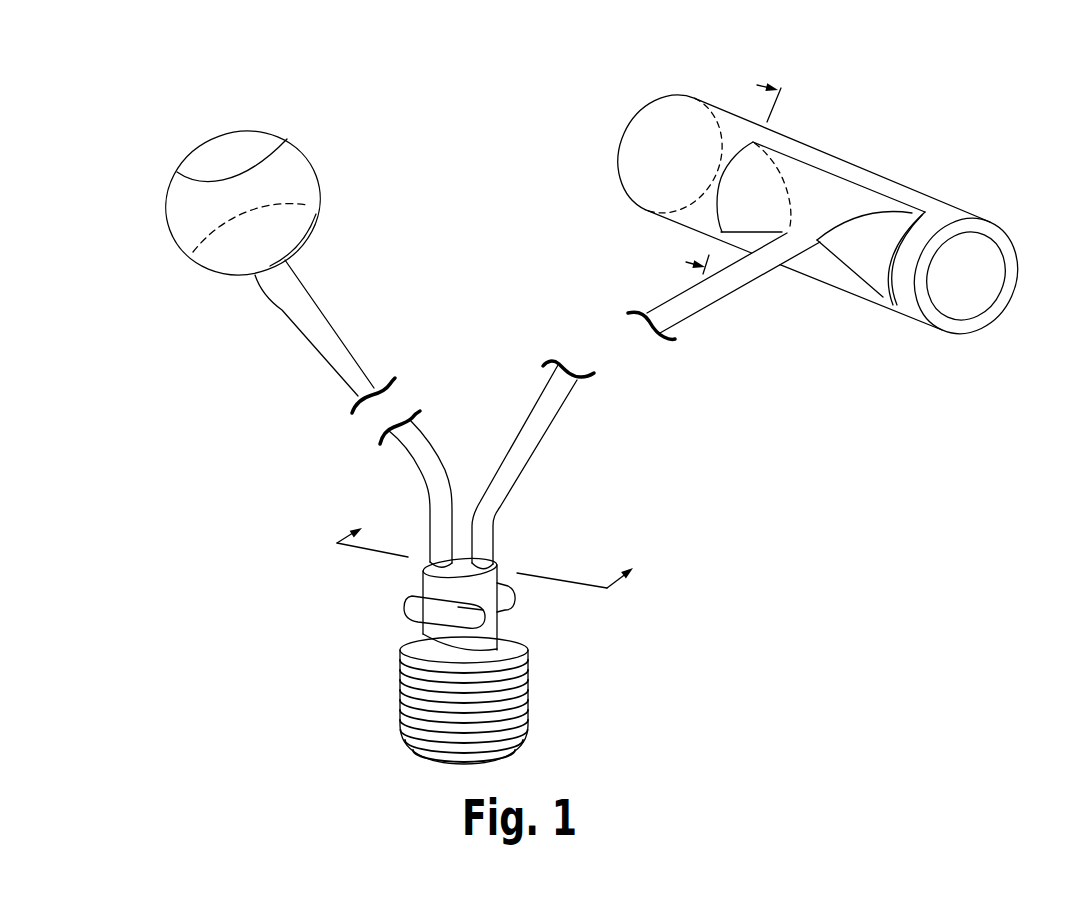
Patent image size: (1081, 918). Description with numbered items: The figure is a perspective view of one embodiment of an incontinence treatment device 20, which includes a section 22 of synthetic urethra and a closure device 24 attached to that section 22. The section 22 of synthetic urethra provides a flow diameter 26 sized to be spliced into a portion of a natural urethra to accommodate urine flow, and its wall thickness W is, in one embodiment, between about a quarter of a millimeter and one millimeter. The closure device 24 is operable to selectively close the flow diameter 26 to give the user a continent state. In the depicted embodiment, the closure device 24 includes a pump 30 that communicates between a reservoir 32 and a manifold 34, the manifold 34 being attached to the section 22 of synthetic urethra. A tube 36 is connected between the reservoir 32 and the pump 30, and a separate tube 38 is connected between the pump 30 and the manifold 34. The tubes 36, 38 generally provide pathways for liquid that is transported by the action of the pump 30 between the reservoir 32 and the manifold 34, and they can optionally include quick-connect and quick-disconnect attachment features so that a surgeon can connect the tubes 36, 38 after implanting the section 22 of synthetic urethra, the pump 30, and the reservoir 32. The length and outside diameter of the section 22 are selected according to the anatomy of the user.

The incontinence treatment device 20 is at (462, 86).
The section of synthetic urethra 22 is at (853, 170).
The closure device 24 is at (814, 262).
The flow diameter 26 is at (954, 276).
The pump 30 is at (558, 653).
The reservoir 32 is at (193, 230).
The manifold 34 is at (871, 262).
The tube 36 is at (318, 350).
The tube 38 is at (708, 290).
The wall thickness W is at (973, 270).